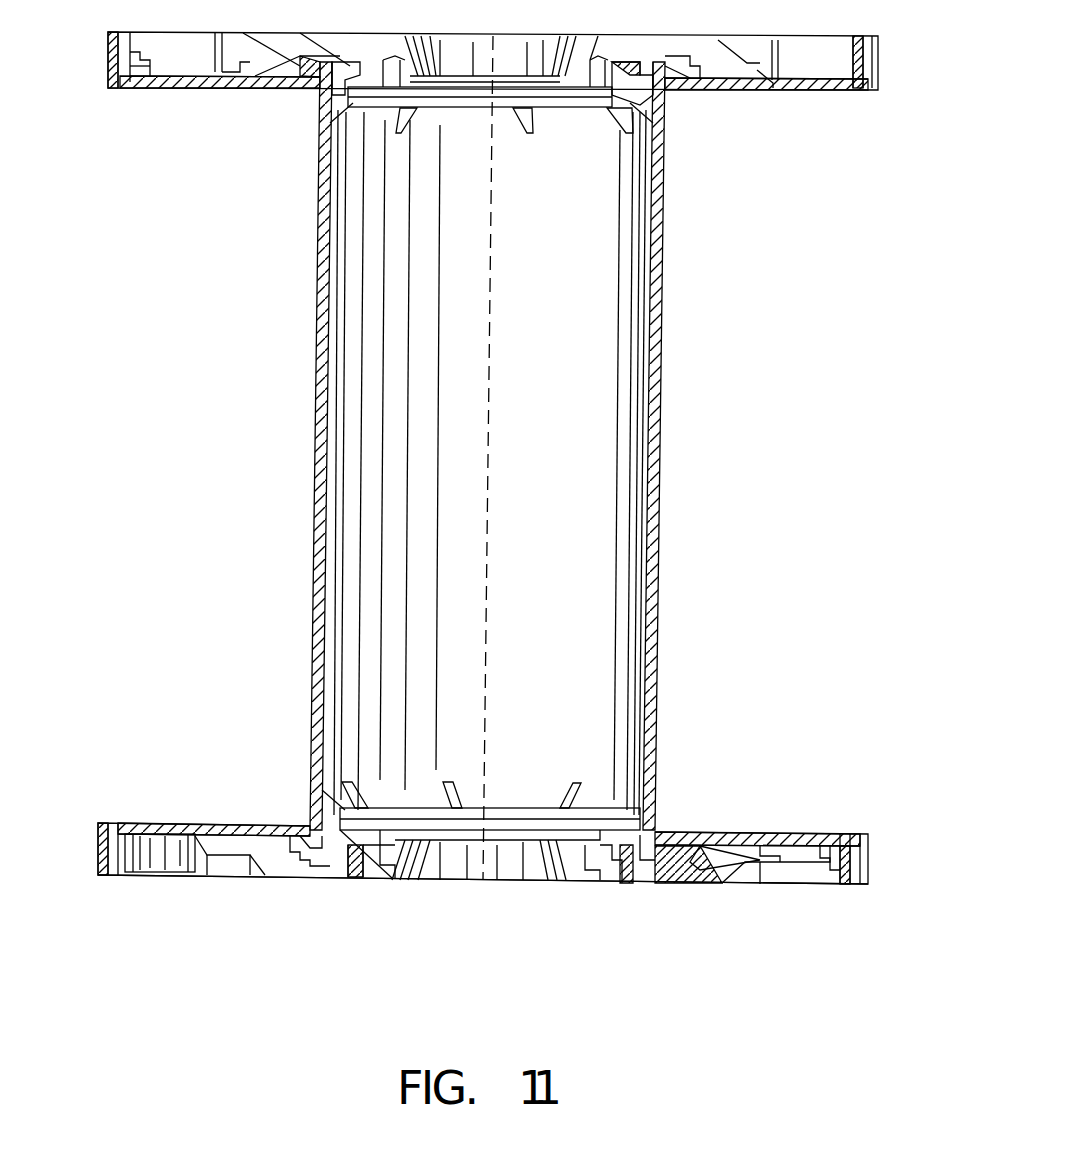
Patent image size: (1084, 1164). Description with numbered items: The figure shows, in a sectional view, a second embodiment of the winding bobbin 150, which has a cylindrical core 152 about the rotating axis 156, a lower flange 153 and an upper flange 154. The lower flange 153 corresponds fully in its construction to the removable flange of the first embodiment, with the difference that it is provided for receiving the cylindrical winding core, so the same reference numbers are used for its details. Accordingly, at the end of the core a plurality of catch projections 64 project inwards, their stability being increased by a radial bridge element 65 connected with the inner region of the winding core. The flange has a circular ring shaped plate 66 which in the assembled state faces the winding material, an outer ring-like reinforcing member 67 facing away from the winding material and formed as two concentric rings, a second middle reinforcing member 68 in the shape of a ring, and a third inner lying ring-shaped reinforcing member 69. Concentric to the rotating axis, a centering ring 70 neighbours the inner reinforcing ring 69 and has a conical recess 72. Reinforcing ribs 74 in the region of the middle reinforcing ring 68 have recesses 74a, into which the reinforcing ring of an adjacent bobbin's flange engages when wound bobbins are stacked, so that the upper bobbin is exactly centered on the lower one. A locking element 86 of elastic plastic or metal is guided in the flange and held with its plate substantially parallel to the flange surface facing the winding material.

The winding bobbin 150 is at (772, 374).
The cylindrical core 152 is at (667, 188).
The lower flange 153 is at (163, 827).
The upper flange 154 is at (867, 92).
The rotating axis 156 is at (487, 517).
The catch projections 64 is at (318, 840).
The radial bridge element 65 is at (323, 785).
The circular ring shaped plate 66 is at (687, 857).
The outer ring-like reinforcing member 67 is at (868, 860).
The middle reinforcing member 68 is at (758, 883).
The inner ring-shaped reinforcing member 69 is at (353, 872).
The centering ring 70 is at (380, 878).
The conical recess 72 is at (372, 835).
The reinforcing ribs 74 is at (162, 865).
The recesses 74a is at (207, 875).
The locking element 86 is at (787, 837).